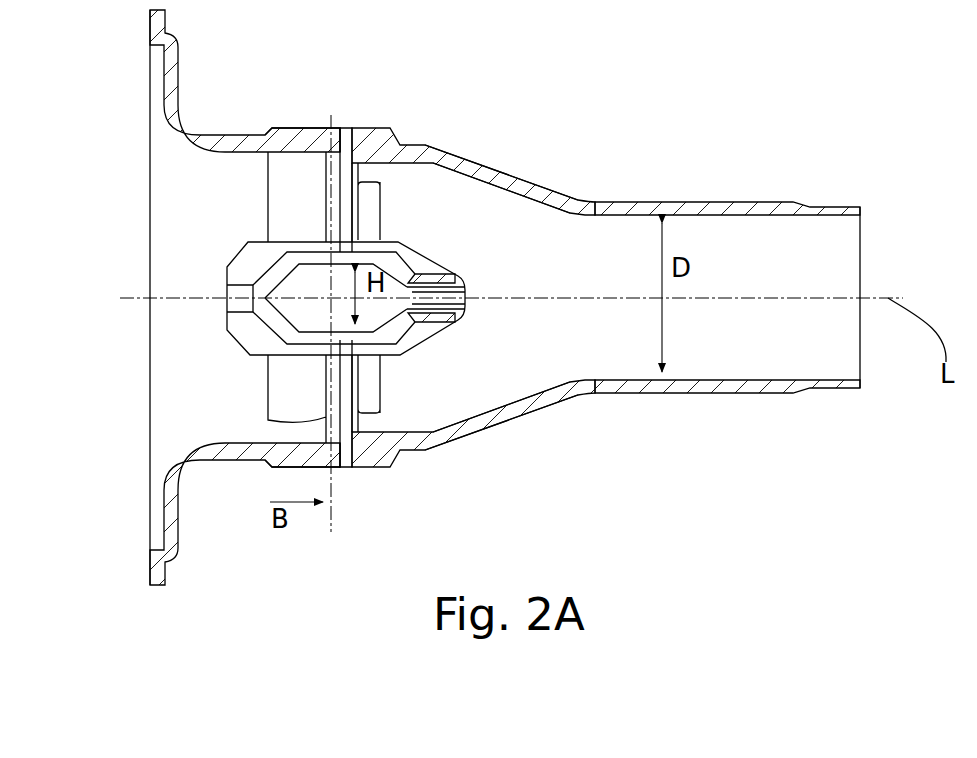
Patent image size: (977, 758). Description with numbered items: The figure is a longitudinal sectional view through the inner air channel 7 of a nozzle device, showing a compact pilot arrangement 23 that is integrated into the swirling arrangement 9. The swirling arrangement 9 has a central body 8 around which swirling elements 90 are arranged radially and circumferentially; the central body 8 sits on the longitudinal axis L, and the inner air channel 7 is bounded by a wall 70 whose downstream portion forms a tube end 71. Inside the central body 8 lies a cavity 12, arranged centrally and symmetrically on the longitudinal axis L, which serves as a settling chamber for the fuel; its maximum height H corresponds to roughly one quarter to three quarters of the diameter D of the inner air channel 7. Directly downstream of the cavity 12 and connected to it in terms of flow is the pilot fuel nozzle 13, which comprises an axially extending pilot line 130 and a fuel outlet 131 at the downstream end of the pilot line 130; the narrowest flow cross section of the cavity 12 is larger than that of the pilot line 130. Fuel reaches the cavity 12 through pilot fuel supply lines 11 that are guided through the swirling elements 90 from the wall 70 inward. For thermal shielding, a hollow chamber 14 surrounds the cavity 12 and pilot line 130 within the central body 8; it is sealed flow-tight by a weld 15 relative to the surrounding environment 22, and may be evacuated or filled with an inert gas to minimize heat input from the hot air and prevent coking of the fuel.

The inner air channel 7 is at (506, 166).
The central body 8 is at (417, 240).
The swirling arrangement 9 is at (289, 146).
The pilot fuel supply lines 11 is at (353, 162).
The cavity 12 is at (388, 308).
The pilot fuel nozzle 13 is at (457, 271).
The hollow chamber 14 is at (264, 278).
The weld 15 is at (235, 303).
The environment 22 is at (213, 284).
The pilot arrangement 23 is at (411, 422).
The wall 70 is at (558, 203).
The tube end 71 is at (860, 348).
The swirling elements 90 is at (340, 173).
The pilot line 130 is at (462, 322).
The fuel outlet 131 is at (466, 297).